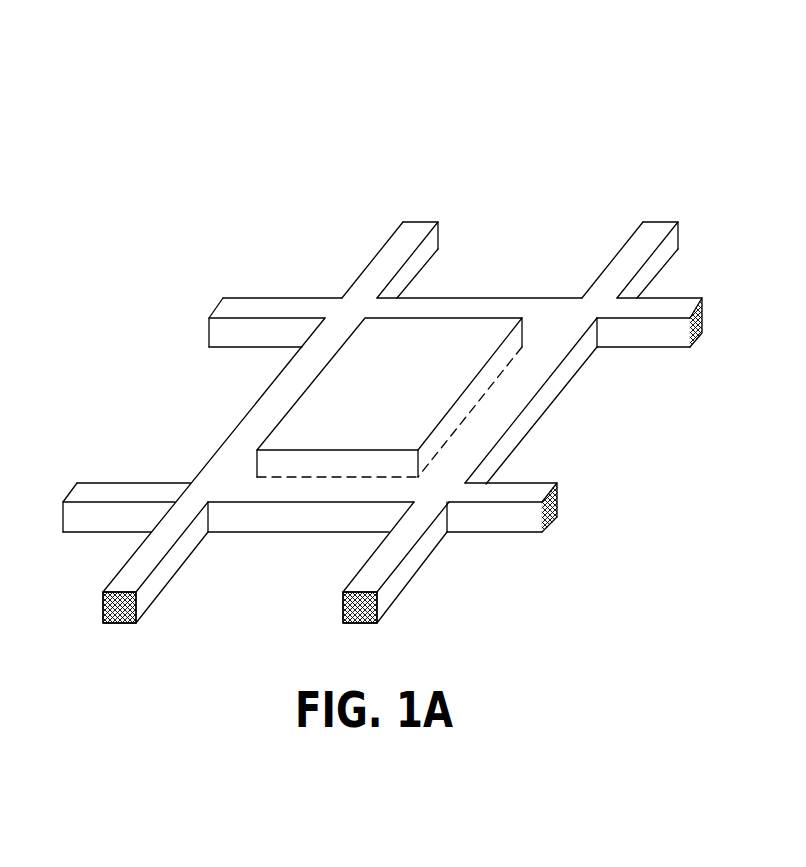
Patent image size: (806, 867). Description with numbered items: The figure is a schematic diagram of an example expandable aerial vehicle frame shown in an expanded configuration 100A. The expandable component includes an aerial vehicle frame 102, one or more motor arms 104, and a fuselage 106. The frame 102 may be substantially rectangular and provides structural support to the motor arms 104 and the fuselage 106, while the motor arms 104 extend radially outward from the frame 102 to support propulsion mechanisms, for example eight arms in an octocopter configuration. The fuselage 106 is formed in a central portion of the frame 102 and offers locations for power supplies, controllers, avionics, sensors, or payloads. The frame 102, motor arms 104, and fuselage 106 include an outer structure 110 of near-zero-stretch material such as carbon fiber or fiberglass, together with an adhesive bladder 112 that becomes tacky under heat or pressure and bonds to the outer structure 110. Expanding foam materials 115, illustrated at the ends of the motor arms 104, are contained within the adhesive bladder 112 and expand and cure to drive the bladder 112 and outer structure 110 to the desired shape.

The expanded configuration 100A is at (683, 145).
The aerial vehicle frame 102 is at (500, 407).
The motor arms 104 is at (412, 558).
The fuselage 106 is at (397, 389).
The outer structure 110 is at (450, 340).
The adhesive bladder 112 is at (116, 624).
The expanding foam materials 115 is at (344, 606).